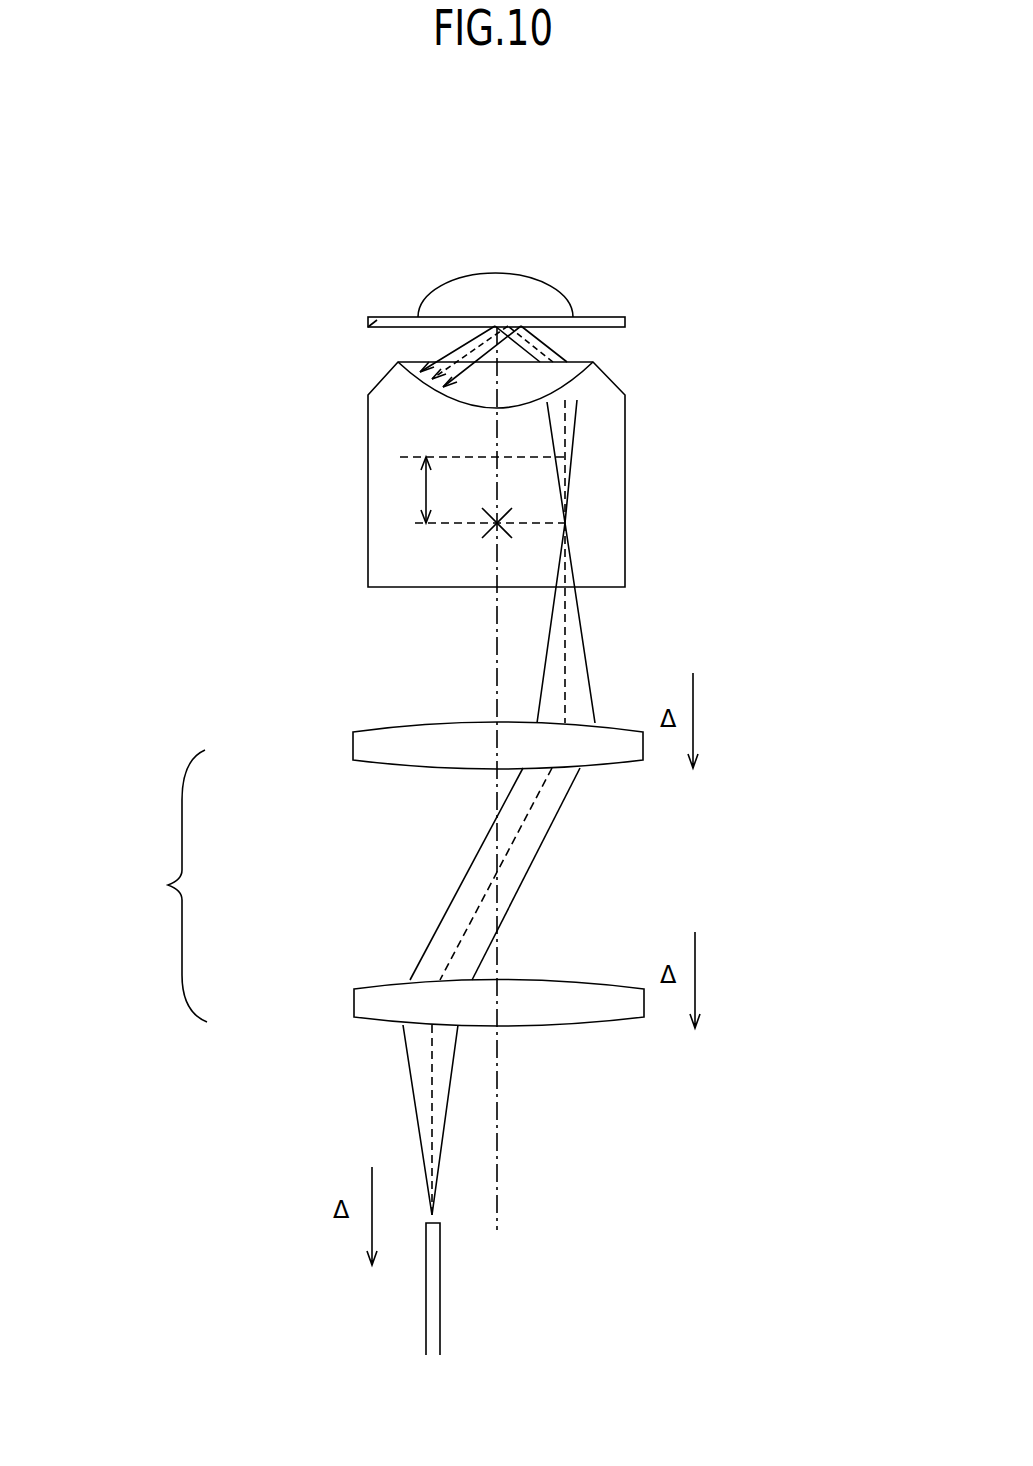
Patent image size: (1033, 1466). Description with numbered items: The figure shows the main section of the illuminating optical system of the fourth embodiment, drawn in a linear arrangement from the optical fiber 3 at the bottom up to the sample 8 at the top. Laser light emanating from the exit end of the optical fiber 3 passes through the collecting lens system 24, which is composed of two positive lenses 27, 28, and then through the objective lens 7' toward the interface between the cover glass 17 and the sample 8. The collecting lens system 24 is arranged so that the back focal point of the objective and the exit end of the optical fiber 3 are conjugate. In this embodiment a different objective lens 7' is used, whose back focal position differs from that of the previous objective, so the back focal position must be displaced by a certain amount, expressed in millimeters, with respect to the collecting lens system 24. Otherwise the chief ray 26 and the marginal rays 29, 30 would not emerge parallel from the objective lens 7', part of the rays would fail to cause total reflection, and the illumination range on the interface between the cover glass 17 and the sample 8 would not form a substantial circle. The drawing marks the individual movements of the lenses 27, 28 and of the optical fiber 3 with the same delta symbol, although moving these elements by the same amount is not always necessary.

The sample 8 is at (458, 295).
The cover glass 17 is at (367, 327).
The objective lens 7' is at (428, 456).
The positive lens 27 is at (357, 752).
The positive lens 28 is at (357, 1008).
The collecting lens system 24 is at (164, 886).
The marginal ray 29 is at (475, 855).
The marginal ray 30 is at (533, 860).
The chief ray 26 is at (432, 1112).
The optical fiber 3 is at (433, 1293).